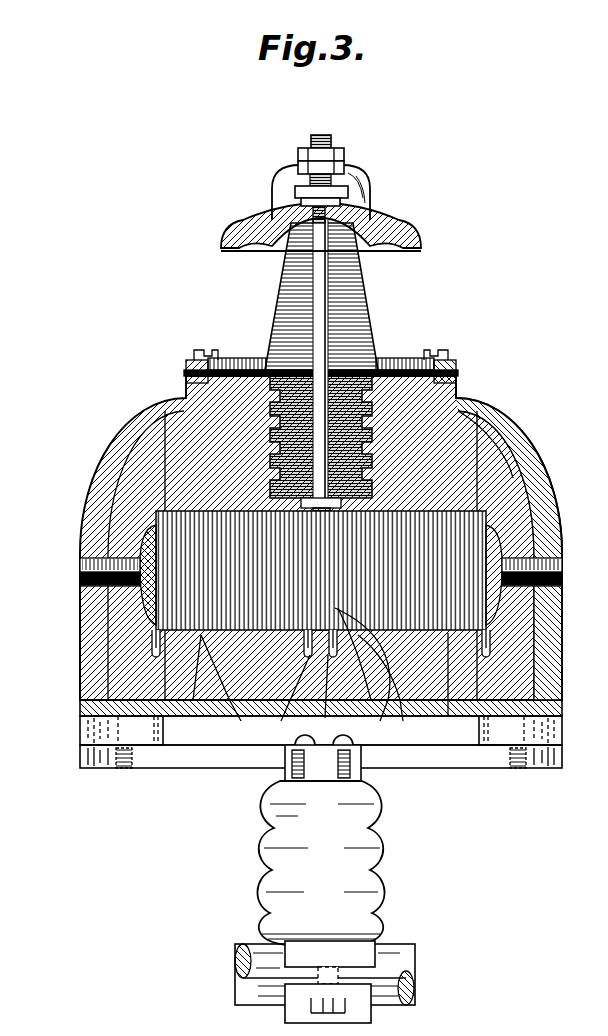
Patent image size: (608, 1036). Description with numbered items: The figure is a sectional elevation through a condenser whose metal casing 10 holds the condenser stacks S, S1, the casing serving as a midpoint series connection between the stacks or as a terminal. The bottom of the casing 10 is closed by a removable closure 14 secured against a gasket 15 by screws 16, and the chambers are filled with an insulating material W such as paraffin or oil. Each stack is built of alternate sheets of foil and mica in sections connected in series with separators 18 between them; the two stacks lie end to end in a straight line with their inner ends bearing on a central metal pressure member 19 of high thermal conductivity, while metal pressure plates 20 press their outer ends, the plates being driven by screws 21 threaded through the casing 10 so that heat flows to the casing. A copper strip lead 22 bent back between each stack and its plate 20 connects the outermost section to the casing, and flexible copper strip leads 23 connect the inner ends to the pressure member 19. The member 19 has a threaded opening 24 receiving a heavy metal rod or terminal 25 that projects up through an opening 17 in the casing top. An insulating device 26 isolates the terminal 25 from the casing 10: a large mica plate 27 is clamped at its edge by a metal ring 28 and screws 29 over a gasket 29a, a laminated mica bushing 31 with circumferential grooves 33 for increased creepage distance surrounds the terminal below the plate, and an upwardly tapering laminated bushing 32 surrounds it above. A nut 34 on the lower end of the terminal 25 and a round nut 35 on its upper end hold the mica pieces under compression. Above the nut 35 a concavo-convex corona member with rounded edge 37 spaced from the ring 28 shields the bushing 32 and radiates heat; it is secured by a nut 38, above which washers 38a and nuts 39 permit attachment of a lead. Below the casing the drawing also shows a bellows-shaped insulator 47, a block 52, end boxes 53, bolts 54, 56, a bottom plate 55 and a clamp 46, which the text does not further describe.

The casing 10 is at (556, 586).
The removable closure 14 is at (227, 687).
The gasket 15 is at (548, 690).
The screws 16 is at (72, 704).
The openings 17 is at (414, 386).
The separators 18 is at (525, 505).
The pressure member 19 is at (324, 700).
The pressure plates 20 is at (132, 538).
The screws 21 is at (72, 568).
The copper strip lead 22 is at (142, 642).
The flexible copper strip leads 23 is at (326, 674).
The threaded opening 24 is at (393, 674).
The terminal 25 is at (327, 294).
The insulating device 26 is at (368, 345).
The plate 27 is at (232, 350).
The metal ring 28 is at (180, 358).
The screws 29 is at (204, 345).
The gasket 29a is at (440, 366).
The insulating bushing 31 is at (246, 360).
The insulating bushing 32 is at (284, 266).
The grooves 33 is at (380, 362).
The nut 34 is at (340, 492).
The round nut 35 is at (340, 226).
The rounded edge 37 is at (411, 236).
The nut 38 is at (285, 188).
The washers 38a is at (340, 184).
The nuts 39 is at (300, 147).
The clamp 46 is at (262, 1002).
The bellows insulator 47 is at (380, 850).
The block 52 is at (343, 742).
The end box 53 is at (72, 729).
The bolt 54 is at (122, 760).
The bottom plate 55 is at (464, 760).
The bolt 56 is at (284, 748).
The stack S is at (200, 687).
The stack S1 is at (458, 720).
The insulating material W is at (505, 444).